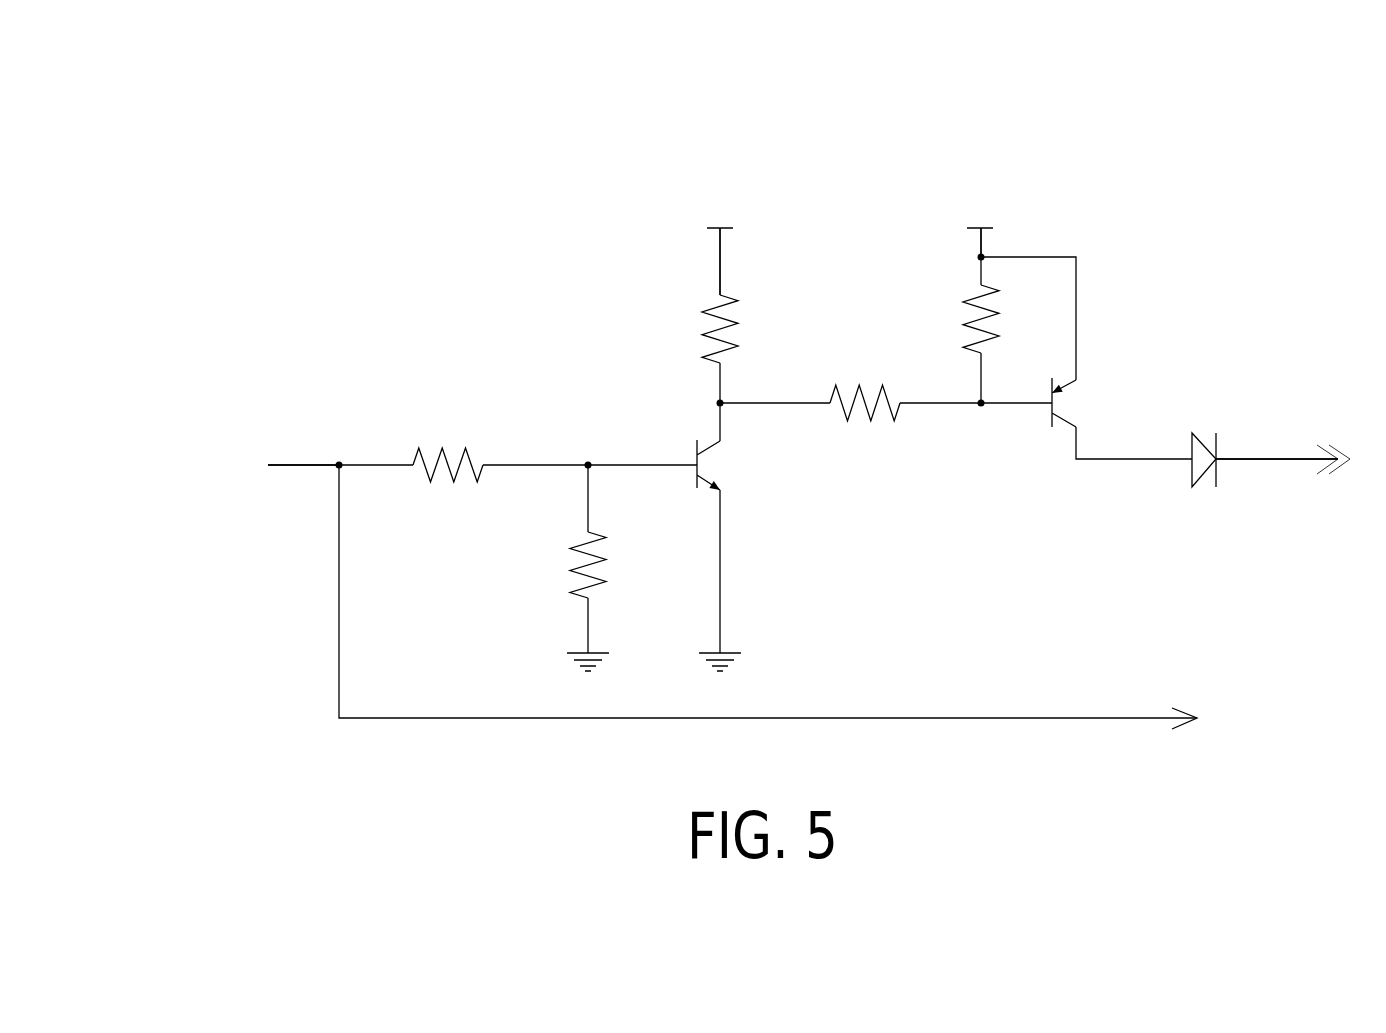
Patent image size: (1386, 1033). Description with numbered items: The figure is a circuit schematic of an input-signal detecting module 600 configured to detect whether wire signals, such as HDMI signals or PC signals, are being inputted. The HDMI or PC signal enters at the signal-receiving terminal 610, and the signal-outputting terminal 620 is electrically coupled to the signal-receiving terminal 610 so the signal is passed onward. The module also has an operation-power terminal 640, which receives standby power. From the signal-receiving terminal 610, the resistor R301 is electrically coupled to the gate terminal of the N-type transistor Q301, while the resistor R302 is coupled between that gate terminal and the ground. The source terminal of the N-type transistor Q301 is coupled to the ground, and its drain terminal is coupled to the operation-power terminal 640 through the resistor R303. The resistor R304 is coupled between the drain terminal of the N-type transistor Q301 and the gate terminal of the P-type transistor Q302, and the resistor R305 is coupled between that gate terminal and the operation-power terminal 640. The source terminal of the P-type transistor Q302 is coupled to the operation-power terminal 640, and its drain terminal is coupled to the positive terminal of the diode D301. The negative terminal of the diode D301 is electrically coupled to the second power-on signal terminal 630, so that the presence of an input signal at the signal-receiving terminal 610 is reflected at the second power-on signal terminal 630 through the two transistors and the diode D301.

The input-signal detecting module 600 is at (835, 55).
The signal-receiving terminal 610 is at (302, 463).
The signal-outputting terminal 620 is at (1067, 716).
The second power-on signal terminal 630 is at (1342, 451).
The operation-power terminal 640 is at (732, 225).
The resistor R301 is at (448, 447).
The resistor R302 is at (556, 565).
The resistor R303 is at (751, 329).
The resistor R304 is at (865, 388).
The resistor R305 is at (951, 319).
The N-type transistor Q301 is at (737, 465).
The P-type transistor Q302 is at (1093, 402).
The diode D301 is at (1203, 476).